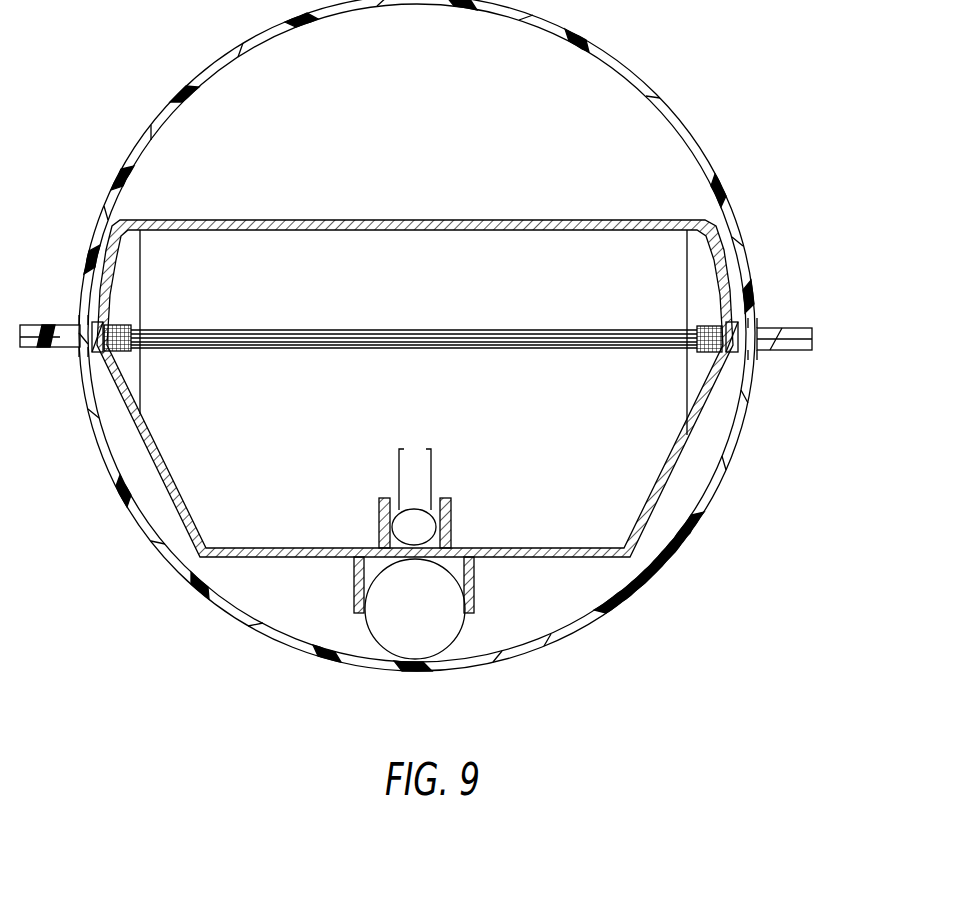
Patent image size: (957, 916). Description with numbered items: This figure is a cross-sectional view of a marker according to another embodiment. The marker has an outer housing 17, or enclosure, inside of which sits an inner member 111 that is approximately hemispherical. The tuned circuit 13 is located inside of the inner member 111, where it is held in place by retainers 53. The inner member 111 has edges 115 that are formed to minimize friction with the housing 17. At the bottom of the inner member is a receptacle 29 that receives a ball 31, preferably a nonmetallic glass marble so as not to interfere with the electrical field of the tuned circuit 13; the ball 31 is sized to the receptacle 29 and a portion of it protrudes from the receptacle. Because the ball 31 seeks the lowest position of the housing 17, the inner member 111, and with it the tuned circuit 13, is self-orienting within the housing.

The housing 17 is at (207, 66).
The tuned circuit 13 is at (200, 343).
The retainers 53 is at (122, 367).
The inner member 111 is at (660, 222).
The edges 115 is at (717, 228).
The receptacle 29 is at (455, 572).
The ball 31 is at (399, 648).